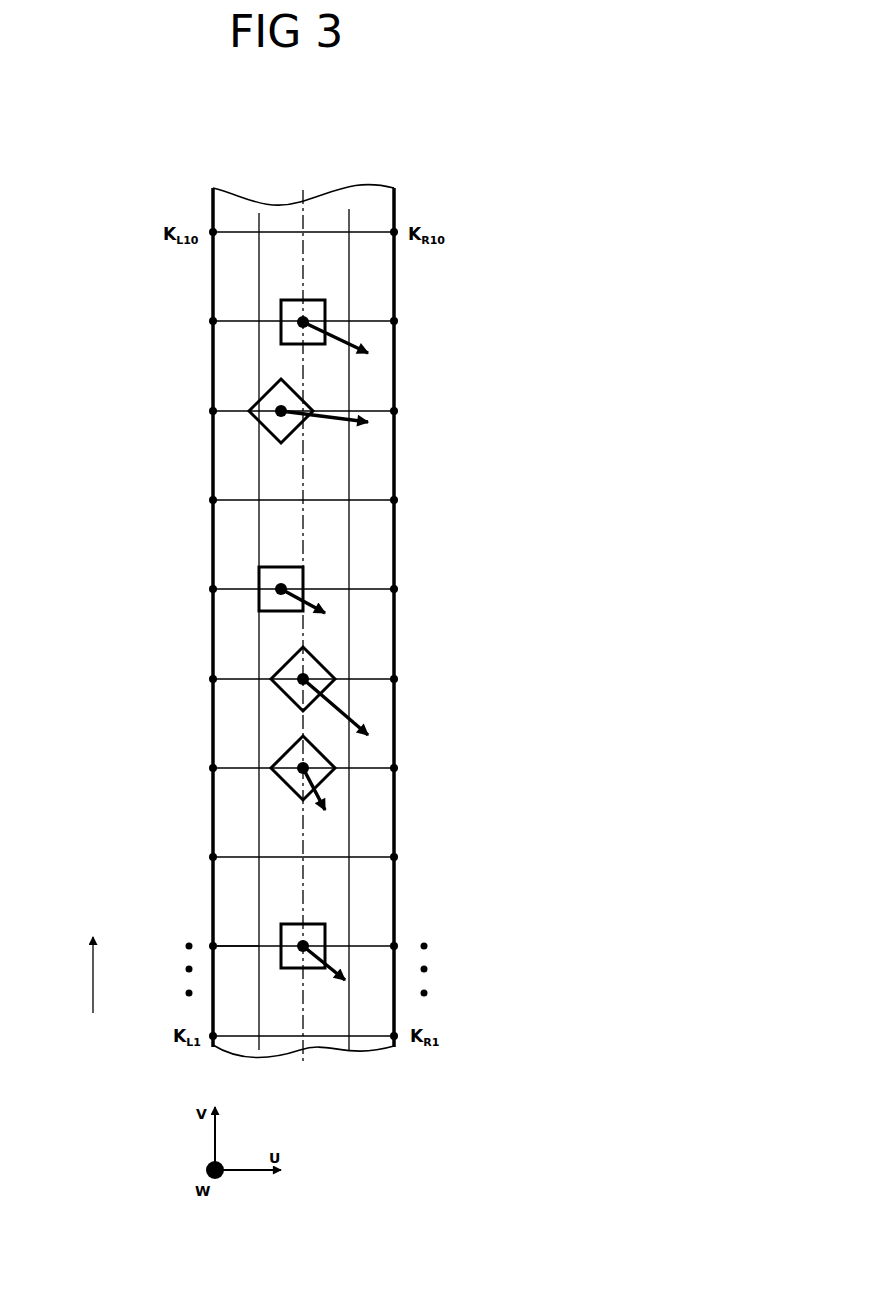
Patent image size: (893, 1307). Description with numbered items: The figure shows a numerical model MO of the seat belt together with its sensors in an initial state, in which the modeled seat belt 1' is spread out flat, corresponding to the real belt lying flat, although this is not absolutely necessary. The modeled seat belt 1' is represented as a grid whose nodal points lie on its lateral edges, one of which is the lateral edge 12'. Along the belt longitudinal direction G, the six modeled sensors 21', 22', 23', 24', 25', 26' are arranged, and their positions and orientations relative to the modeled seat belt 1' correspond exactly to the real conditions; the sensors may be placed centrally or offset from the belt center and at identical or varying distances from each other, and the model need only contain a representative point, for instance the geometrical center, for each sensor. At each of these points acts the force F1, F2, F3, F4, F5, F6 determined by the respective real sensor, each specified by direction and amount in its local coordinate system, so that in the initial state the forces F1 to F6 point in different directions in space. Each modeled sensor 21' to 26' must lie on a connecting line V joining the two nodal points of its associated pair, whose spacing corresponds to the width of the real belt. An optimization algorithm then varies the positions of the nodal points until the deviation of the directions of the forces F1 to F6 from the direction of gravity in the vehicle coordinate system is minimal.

The modeled seat belt 1' is at (370, 625).
The lateral edge of the modeled seat belt 12' is at (447, 617).
The modeled sensor 21' is at (380, 924).
The modeled sensor 22' is at (232, 762).
The modeled sensor 23' is at (373, 668).
The modeled sensor 24' is at (369, 583).
The modeled sensor 25' is at (221, 423).
The modeled sensor 26' is at (384, 307).
The force F1 is at (332, 976).
The force F2 is at (323, 793).
The force F3 is at (335, 701).
The force F4 is at (293, 601).
The force F5 is at (377, 441).
The force F6 is at (398, 343).
The model MO is at (424, 181).
The connecting line V is at (242, 947).
The belt longitudinal direction G is at (80, 975).